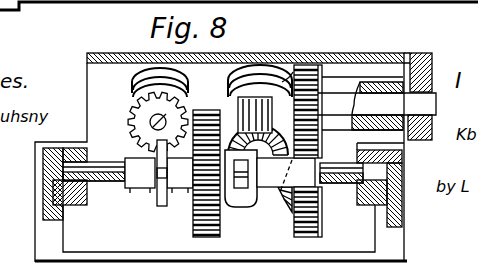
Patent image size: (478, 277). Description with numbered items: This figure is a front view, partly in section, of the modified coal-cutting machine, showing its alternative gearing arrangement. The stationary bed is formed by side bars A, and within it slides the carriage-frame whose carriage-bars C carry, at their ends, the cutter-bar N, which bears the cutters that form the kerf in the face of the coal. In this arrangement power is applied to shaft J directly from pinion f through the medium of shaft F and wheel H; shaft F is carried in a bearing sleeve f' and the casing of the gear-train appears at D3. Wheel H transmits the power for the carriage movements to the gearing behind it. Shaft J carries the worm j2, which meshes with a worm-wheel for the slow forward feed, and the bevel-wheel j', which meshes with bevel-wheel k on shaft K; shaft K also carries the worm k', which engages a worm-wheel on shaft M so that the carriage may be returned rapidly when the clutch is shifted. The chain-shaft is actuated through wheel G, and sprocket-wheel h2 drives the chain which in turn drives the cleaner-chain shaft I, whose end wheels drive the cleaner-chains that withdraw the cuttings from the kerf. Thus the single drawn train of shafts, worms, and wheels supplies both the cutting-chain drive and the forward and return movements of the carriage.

The casing D3 is at (48, 68).
The cutter-bar N is at (412, 165).
The side bars A is at (413, 220).
The carriage-bars C is at (357, 200).
The cleaner-chain shaft I is at (187, 104).
The worm j2 is at (150, 192).
The sprocket-wheel h2 is at (163, 206).
The wheel G is at (192, 228).
The bevel-wheel j' is at (260, 178).
The bevel-wheel k is at (241, 188).
The worm k' is at (286, 183).
The wheel H is at (318, 230).
The bearing sleeve f' is at (362, 113).
The shaft F is at (432, 106).
The pinion f is at (380, 118).